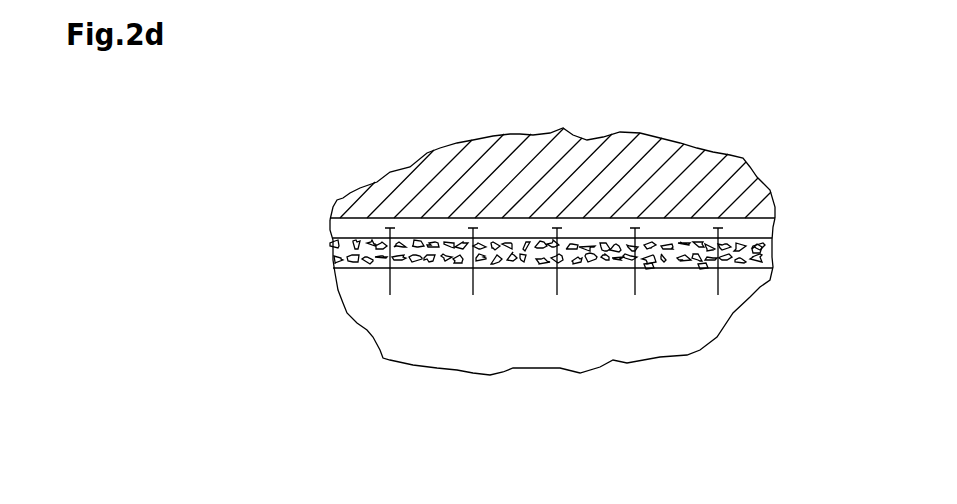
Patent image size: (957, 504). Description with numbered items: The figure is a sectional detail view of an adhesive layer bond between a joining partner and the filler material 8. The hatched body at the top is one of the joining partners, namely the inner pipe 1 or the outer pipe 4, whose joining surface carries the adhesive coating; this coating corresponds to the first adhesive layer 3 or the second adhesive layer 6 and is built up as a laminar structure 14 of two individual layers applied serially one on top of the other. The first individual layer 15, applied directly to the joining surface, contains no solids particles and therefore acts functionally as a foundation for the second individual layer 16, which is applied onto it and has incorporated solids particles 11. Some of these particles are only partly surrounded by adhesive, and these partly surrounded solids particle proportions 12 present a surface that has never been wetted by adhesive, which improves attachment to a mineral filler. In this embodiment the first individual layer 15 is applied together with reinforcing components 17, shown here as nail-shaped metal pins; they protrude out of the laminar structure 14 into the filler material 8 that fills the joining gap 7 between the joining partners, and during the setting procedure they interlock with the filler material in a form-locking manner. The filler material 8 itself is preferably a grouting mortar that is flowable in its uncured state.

The inner pipe 1 is at (552, 141).
The outer pipe 4 is at (633, 152).
The first adhesive layer 3 is at (520, 231).
The second adhesive layer 6 is at (520, 231).
The joining gap 7 is at (577, 296).
The filler material 8 is at (717, 302).
The solids particles 11 is at (757, 245).
The only partly surrounded solids particle proportions 12 is at (648, 270).
The laminar structure 14 is at (479, 231).
The first individual layer 15 is at (368, 228).
The second individual layer 16 is at (343, 252).
The reinforcing components 17 is at (390, 270).